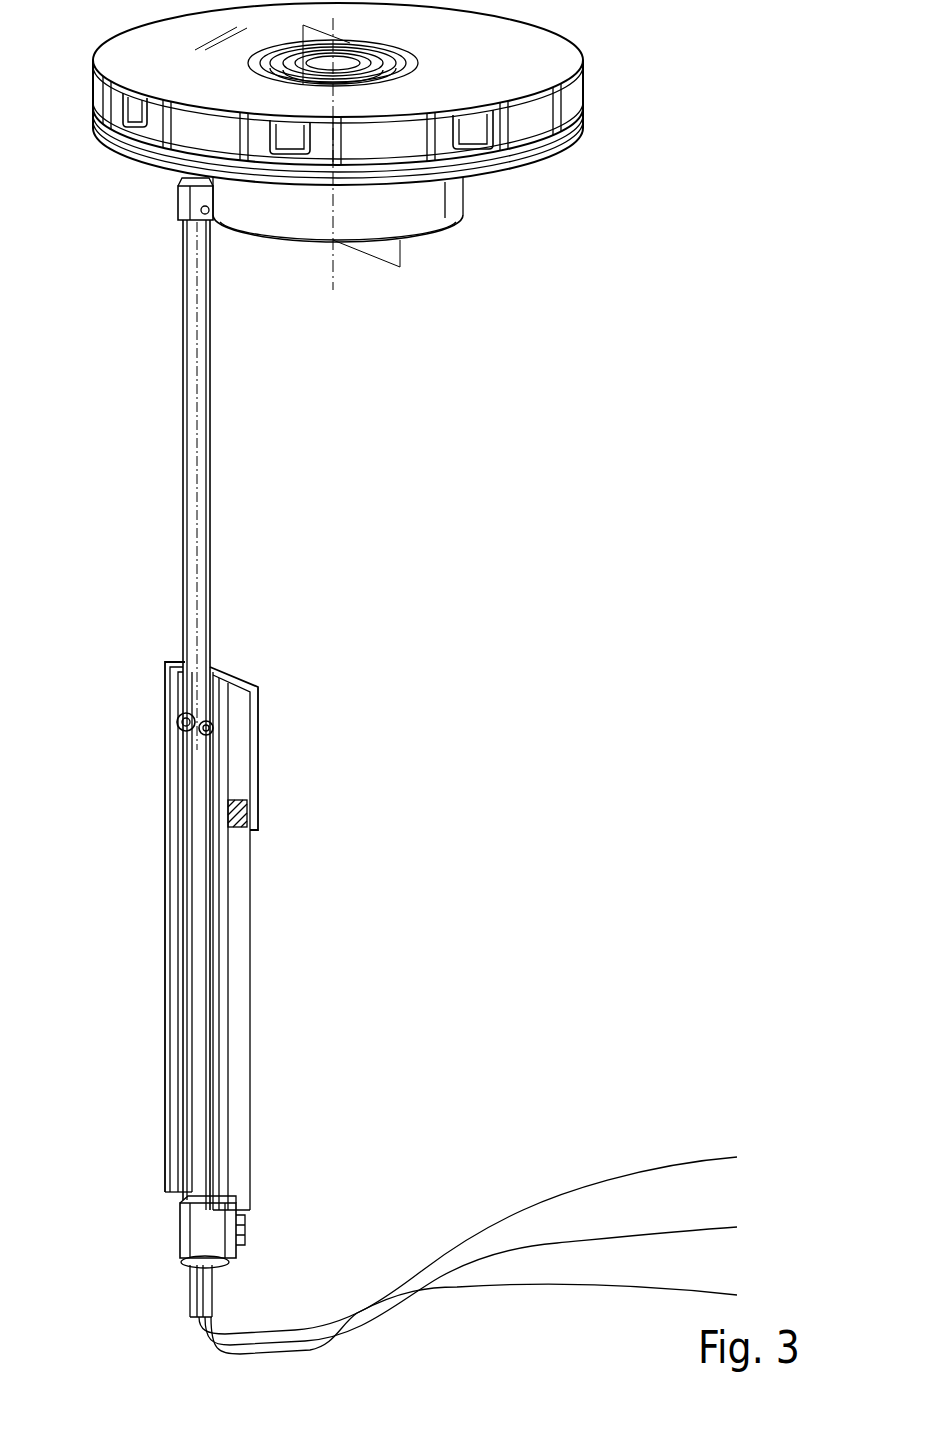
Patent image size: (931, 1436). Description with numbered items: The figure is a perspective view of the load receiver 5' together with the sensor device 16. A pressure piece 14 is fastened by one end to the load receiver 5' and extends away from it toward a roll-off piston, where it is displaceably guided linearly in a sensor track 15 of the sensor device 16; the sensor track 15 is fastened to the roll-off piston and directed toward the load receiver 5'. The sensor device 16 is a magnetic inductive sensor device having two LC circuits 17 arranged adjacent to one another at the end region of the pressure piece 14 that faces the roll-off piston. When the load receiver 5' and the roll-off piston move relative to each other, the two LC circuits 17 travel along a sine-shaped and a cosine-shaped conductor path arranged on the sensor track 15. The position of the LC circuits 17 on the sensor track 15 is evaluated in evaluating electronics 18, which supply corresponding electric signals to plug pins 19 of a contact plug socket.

The load receiver 5' is at (431, 171).
The pressure piece 14 is at (207, 397).
The sensor track 15 is at (202, 932).
The sensor device 16 is at (403, 988).
The LC circuits 17 is at (190, 720).
The evaluating electronics 18 is at (232, 773).
The plug pins 19 is at (490, 1243).